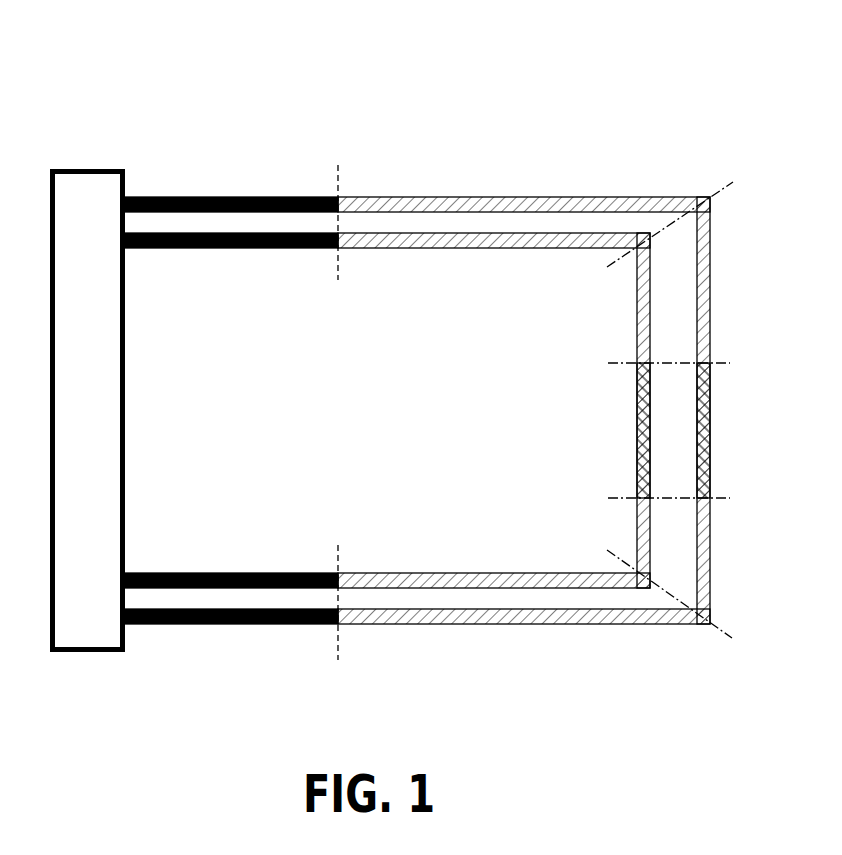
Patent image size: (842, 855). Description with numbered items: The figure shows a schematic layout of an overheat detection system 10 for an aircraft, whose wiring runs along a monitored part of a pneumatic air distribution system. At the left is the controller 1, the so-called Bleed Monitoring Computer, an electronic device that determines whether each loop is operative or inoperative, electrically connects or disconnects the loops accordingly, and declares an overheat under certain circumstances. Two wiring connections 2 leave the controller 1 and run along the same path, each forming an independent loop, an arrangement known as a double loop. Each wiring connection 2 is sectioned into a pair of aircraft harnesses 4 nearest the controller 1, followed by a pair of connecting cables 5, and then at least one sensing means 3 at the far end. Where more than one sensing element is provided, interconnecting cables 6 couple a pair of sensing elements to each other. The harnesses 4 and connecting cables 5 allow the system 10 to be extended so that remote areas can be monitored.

The controller 1 is at (84, 627).
The wiring connection 2 is at (680, 185).
The sensing means 3 is at (650, 465).
The aircraft harness 4 is at (228, 235).
The connecting cable 5 is at (517, 235).
The interconnecting cable 6 is at (650, 310).
The overheat detection system 10 is at (120, 143).